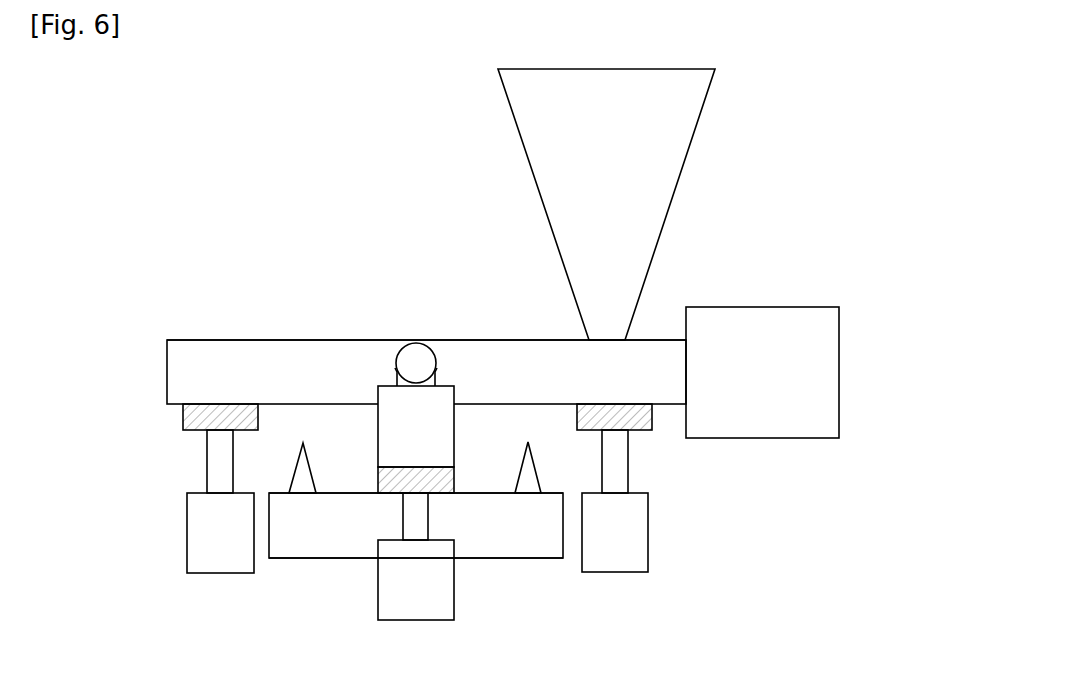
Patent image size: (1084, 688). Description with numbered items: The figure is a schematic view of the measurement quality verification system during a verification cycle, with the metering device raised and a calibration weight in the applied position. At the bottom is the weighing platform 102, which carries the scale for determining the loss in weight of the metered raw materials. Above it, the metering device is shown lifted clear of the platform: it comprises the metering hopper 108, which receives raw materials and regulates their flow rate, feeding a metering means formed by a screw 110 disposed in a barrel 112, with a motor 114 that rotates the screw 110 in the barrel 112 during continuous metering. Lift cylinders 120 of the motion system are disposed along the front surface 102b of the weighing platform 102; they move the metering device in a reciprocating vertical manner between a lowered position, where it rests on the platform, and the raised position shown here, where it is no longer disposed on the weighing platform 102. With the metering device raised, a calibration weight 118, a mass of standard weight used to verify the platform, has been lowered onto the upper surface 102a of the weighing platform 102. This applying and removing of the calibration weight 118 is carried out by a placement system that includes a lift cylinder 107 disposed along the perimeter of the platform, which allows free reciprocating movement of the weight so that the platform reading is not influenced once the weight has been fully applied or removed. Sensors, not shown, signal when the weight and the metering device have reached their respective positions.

The weighing platform 102 is at (517, 523).
The upper surface of the weighing platform 102a is at (347, 493).
The front surface of the weighing platform 102b is at (317, 562).
The lift cylinder 107 is at (423, 601).
The metering hopper 108 is at (655, 127).
The screw 110 is at (177, 373).
The barrel 112 is at (220, 339).
The motor 114 is at (817, 367).
The calibration weight 118 is at (432, 412).
The lift cylinder 120 is at (205, 530).